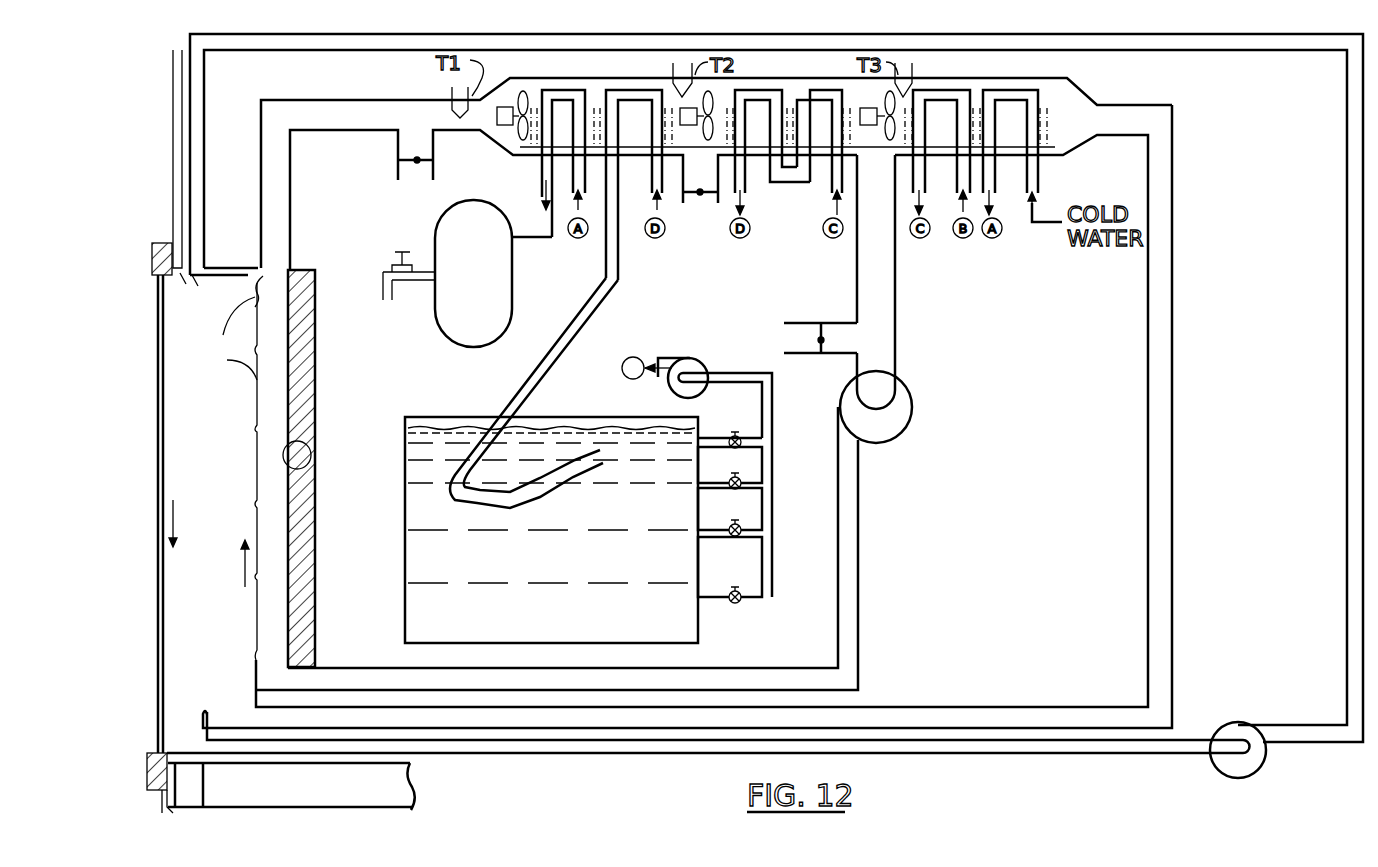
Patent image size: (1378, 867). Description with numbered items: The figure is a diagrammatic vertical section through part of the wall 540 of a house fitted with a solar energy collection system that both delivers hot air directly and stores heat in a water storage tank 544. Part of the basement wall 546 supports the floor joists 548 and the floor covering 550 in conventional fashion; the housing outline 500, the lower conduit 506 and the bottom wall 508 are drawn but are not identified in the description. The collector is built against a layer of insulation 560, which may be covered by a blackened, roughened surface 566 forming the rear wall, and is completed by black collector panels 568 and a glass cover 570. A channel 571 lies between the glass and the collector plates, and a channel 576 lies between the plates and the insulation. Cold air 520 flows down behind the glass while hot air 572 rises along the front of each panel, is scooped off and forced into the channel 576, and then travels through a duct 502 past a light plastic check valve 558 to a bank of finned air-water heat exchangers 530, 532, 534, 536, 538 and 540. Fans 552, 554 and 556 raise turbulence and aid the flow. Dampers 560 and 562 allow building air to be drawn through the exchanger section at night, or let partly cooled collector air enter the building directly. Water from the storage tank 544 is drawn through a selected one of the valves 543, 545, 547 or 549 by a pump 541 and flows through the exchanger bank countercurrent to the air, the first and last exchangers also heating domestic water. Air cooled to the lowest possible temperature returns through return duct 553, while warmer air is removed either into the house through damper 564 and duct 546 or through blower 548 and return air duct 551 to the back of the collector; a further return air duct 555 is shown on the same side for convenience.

The housing 500 is at (765, 394).
The duct 502 is at (278, 223).
The conduit 506 is at (687, 416).
The bottom wall 508 is at (557, 549).
The cold air 520 is at (200, 523).
The heat exchanger 530 is at (563, 86).
The heat exchanger 532 is at (637, 86).
The heat exchanger 534 is at (758, 86).
The heat exchanger 536 is at (823, 86).
The heat exchanger 538 is at (941, 86).
The wall of the house 540 is at (318, 408).
The pump 541 is at (685, 367).
The valve 543 is at (730, 435).
The water storage tank 544 is at (395, 580).
The valve 545 is at (732, 478).
The basement wall 546 is at (810, 323).
The valve 547 is at (732, 523).
The floor joists 548 is at (898, 413).
The valve 549 is at (727, 587).
The floor covering 550 is at (1240, 730).
The return air duct 551 is at (473, 680).
The fan 552 is at (502, 125).
The return air duct 553 is at (562, 717).
The fan 554 is at (688, 126).
The return air duct 555 is at (195, 238).
The fan 556 is at (868, 126).
The check valve 558 is at (380, 123).
The layer of insulation 560 is at (424, 165).
The damper 562 is at (708, 197).
The damper 564 is at (828, 330).
The surface 566 is at (305, 455).
The black collector panels 568 is at (253, 343).
The glass cover 570 is at (160, 420).
The channel 571 is at (206, 467).
The hot air 572 is at (222, 563).
The channel 576 is at (273, 515).